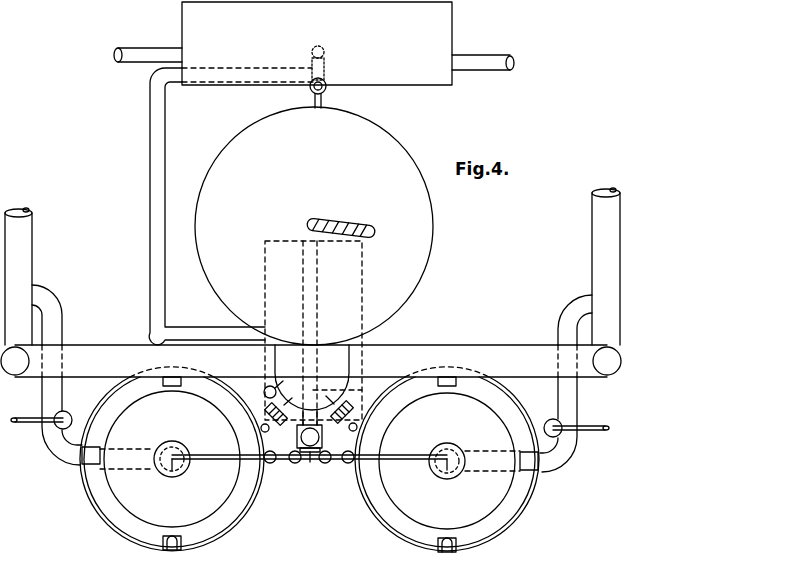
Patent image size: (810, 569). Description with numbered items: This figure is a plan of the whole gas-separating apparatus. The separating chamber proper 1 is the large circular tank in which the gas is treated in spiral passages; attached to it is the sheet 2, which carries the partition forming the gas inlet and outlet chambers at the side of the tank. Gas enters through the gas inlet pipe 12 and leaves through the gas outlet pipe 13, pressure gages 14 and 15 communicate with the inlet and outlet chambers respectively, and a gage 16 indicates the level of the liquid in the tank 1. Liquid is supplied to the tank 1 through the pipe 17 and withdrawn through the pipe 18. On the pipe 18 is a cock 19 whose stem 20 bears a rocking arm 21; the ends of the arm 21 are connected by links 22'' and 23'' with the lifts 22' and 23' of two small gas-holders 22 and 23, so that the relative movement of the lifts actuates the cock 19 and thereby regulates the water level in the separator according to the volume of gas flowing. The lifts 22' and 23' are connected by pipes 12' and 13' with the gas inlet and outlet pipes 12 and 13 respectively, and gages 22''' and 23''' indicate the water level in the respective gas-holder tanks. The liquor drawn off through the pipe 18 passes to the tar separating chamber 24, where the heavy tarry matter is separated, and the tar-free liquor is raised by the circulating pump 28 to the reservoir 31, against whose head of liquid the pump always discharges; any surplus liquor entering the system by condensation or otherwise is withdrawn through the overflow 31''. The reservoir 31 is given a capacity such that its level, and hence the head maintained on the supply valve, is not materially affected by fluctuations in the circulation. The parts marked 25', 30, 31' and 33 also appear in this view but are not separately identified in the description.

The separating chamber 1 is at (314, 226).
The sheet 2 is at (318, 333).
The gas inlet pipe 12 is at (496, 281).
The pipe 12' is at (565, 383).
The gas outlet pipe 13 is at (304, 292).
The pipe 13' is at (55, 375).
The pressure gage 14 is at (345, 420).
The pressure gage 15 is at (275, 421).
The gage 16 is at (264, 392).
The liquid supply pipe 17 is at (314, 98).
The liquid withdrawal pipe 18 is at (362, 391).
The cock 19 is at (297, 440).
The stem 20 is at (312, 463).
The rocking arm 21 is at (214, 459).
The gas-holder 22 is at (444, 461).
The lift 22' is at (449, 461).
The link 22'' is at (338, 466).
The gage 22''' is at (568, 410).
The gas-holder 23 is at (172, 461).
The lift 23' is at (170, 459).
The link 23'' is at (282, 470).
The gage 23''' is at (55, 405).
The tar separating chamber 24 is at (358, 346).
The steam pipe 25' is at (207, 206).
The circulating pump 28 is at (325, 68).
The valve body 30 is at (326, 89).
The reservoir 31 is at (317, 43).
The right tank pipe 31' is at (483, 48).
The overflow 31'' is at (148, 39).
The fire door screw 33 is at (371, 225).